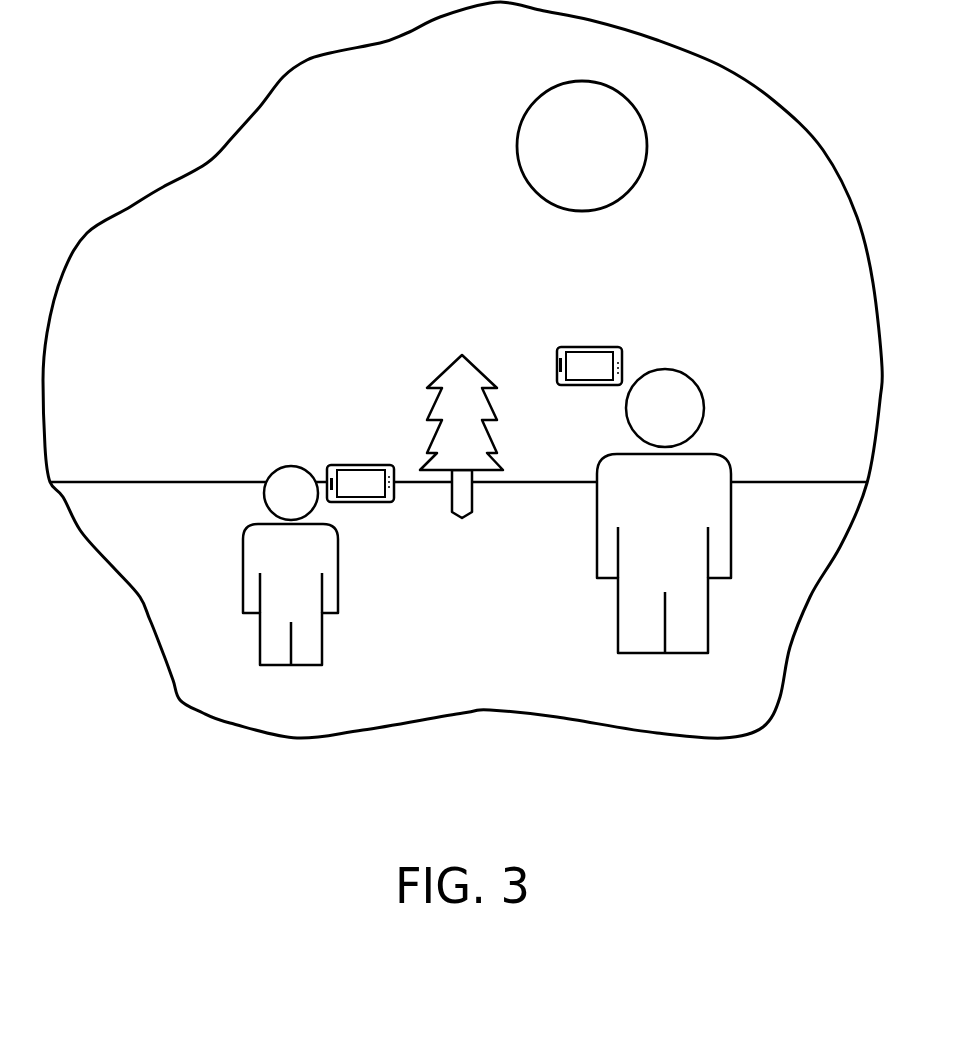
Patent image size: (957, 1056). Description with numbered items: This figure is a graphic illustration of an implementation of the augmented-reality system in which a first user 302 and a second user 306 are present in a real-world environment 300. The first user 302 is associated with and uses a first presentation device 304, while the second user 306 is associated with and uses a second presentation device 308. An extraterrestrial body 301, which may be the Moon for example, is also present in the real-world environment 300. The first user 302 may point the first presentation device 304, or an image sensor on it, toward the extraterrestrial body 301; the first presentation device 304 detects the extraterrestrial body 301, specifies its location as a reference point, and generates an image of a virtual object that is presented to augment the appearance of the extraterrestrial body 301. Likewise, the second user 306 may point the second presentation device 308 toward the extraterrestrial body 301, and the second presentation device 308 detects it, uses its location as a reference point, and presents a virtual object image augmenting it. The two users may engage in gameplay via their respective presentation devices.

The real-world environment 300 is at (170, 297).
The extraterrestrial body 301 is at (516, 152).
The first user 302 is at (597, 493).
The first presentation device 304 is at (625, 363).
The second user 306 is at (240, 577).
The second presentation device 308 is at (332, 465).